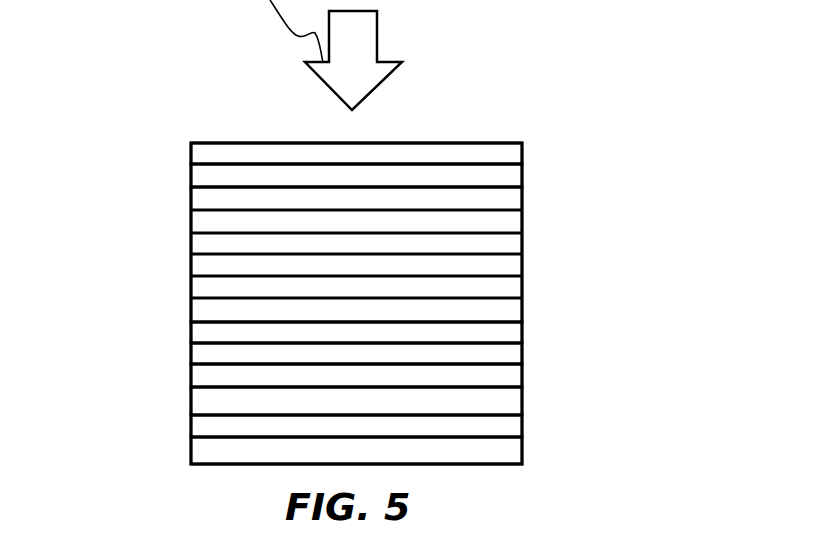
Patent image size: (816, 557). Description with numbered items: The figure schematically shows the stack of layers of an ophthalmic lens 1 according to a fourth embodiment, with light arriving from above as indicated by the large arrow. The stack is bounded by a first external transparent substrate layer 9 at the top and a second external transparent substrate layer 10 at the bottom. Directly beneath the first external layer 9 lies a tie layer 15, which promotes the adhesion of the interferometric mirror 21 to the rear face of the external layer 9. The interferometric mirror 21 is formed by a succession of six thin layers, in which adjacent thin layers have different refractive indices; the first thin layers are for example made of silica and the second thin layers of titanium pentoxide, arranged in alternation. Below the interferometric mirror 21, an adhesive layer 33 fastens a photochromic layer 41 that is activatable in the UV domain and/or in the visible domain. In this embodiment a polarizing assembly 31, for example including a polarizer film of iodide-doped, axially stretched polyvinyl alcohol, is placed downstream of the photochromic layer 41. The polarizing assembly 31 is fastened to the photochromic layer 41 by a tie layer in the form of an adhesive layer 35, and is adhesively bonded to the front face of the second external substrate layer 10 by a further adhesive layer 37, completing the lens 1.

The ophthalmic lens 1 is at (522, 120).
The first external transparent substrate layer 9 is at (515, 152).
The tie layer 15 is at (515, 176).
The interferometric mirror 21 is at (185, 188).
The adhesive layer 33 is at (190, 336).
The photochromic layer 41 is at (190, 353).
The adhesive layer 35 is at (190, 380).
The polarizing assembly 31 is at (190, 398).
The adhesive layer 37 is at (190, 425).
The second external transparent substrate layer 10 is at (523, 444).